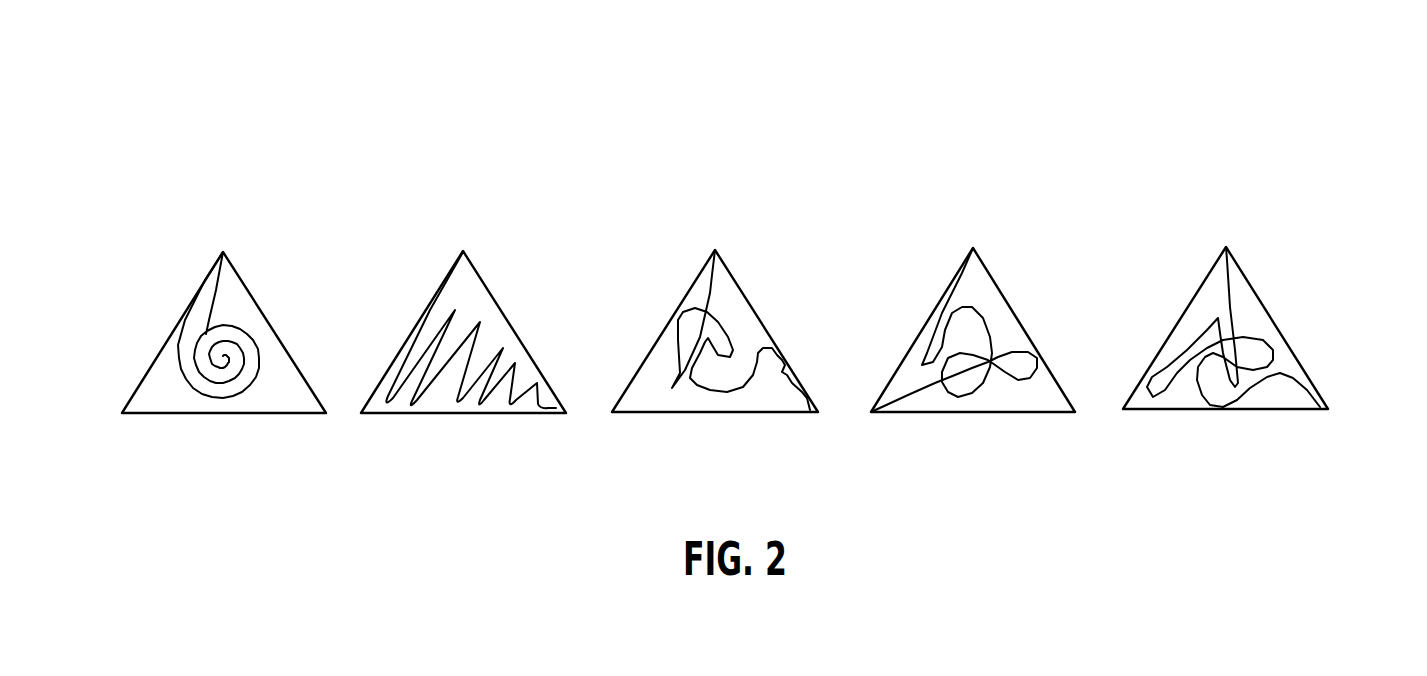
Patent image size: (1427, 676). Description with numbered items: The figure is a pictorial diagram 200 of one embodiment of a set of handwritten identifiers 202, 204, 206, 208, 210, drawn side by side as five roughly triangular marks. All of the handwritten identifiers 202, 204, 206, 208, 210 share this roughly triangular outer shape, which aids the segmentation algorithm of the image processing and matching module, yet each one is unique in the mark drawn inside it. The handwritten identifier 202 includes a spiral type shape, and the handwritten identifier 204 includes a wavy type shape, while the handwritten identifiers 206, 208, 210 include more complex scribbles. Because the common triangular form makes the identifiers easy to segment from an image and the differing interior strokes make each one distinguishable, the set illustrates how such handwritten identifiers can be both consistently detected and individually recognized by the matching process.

The pictorial diagram 200 is at (312, 116).
The handwritten identifier 202 is at (254, 332).
The handwritten identifier 204 is at (495, 332).
The handwritten identifier 206 is at (747, 331).
The handwritten identifier 208 is at (1005, 330).
The handwritten identifier 210 is at (1256, 328).